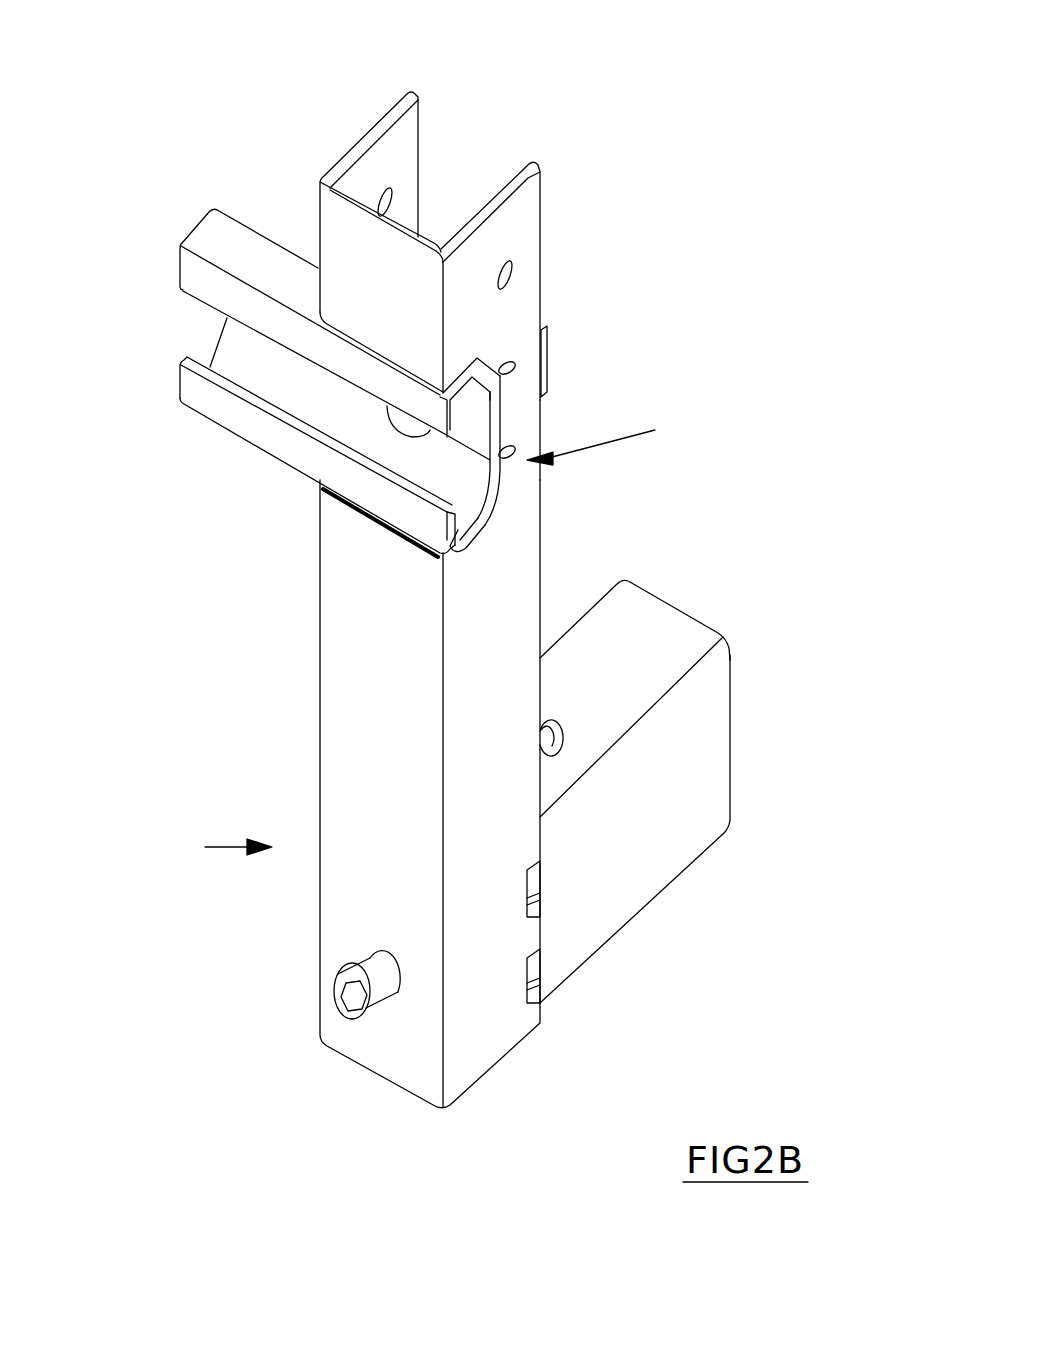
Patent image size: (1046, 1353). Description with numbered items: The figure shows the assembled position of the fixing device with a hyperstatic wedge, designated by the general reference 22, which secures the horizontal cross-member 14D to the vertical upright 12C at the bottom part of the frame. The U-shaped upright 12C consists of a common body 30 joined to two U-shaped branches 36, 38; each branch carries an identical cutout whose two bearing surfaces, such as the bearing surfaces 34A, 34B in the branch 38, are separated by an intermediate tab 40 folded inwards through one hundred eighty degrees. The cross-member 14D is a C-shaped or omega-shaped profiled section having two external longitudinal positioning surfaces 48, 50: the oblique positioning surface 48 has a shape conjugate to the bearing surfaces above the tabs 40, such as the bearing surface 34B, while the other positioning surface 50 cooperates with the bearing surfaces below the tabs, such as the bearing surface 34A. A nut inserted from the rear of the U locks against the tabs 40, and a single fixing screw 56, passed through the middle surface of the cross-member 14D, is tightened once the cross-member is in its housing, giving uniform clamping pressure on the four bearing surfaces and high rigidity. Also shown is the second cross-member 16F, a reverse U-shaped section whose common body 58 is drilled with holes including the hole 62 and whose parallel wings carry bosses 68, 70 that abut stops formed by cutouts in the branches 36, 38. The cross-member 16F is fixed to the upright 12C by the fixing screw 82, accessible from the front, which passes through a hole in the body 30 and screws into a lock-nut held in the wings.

The U-shaped branch 36 is at (405, 155).
The U-shaped branch 38 is at (516, 173).
The oblique positioning surface 48 is at (542, 330).
The bearing surface 34B is at (492, 397).
The intermediate tab 40 is at (530, 410).
The fixing device with a hyperstatic wedge 22 is at (740, 420).
The fixing screw 56 is at (420, 421).
The horizontal cross-member 14D is at (233, 415).
The bearing surface 34A is at (495, 488).
The positioning surface 50 is at (466, 540).
The common body 58 is at (668, 632).
The common body 30 is at (352, 690).
The hole 62 is at (549, 748).
The boss 68 is at (533, 882).
The vertical upright 12C is at (198, 852).
The boss 70 is at (533, 970).
The cross-member 16F is at (703, 813).
The fixing screw 82 is at (350, 1012).